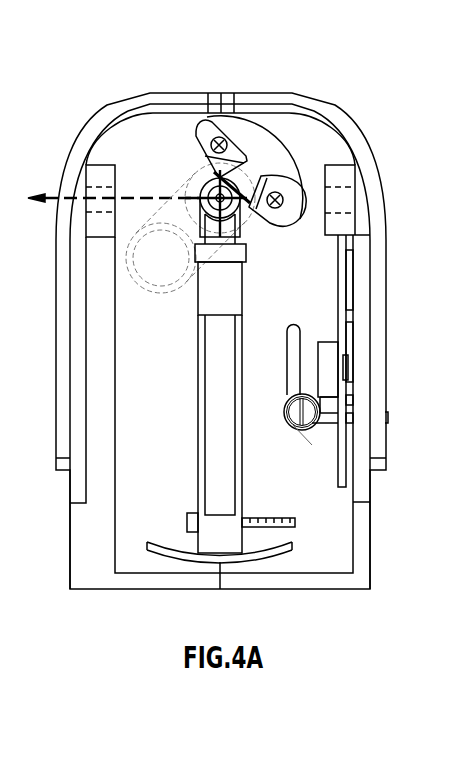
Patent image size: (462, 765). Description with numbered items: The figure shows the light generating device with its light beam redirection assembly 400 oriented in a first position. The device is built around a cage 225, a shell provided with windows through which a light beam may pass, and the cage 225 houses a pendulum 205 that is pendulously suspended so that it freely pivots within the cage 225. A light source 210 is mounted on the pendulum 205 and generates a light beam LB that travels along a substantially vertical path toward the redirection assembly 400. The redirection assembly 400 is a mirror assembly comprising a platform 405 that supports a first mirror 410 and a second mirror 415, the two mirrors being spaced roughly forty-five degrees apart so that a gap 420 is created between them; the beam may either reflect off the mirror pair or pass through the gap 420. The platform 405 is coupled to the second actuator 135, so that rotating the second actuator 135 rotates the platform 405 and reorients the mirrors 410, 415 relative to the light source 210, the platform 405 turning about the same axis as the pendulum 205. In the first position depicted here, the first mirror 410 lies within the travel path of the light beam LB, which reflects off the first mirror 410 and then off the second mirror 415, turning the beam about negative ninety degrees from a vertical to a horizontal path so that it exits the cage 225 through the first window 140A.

The second actuator 135 is at (145, 293).
The first window 140A is at (62, 190).
The light beam LB is at (60, 200).
The pendulum 205 is at (215, 420).
The light source 210 is at (233, 299).
The cage 225 is at (370, 547).
The light beam redirection assembly 400 is at (267, 144).
The platform 405 is at (276, 157).
The first mirror 410 is at (198, 120).
The second mirror 415 is at (343, 150).
The gap 420 is at (252, 167).